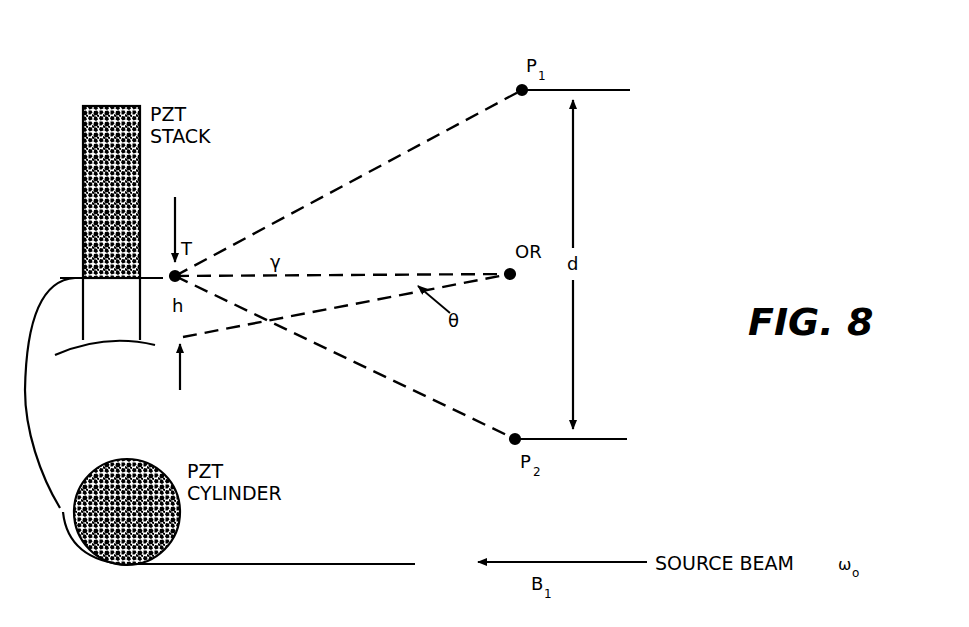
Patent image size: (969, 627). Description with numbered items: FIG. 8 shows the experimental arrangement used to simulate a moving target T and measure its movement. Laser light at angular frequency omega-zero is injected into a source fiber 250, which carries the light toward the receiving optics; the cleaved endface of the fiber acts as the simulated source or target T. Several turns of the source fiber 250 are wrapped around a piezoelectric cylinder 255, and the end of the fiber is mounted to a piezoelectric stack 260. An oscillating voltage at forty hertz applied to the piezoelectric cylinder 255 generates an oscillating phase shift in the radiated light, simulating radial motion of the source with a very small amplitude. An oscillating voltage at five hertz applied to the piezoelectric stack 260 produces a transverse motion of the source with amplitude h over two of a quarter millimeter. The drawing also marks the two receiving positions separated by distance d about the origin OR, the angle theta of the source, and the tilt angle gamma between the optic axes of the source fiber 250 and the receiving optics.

The source fiber 250 is at (300, 566).
The piezoelectric cylinder 255 is at (143, 424).
The piezoelectric stack 260 is at (117, 106).